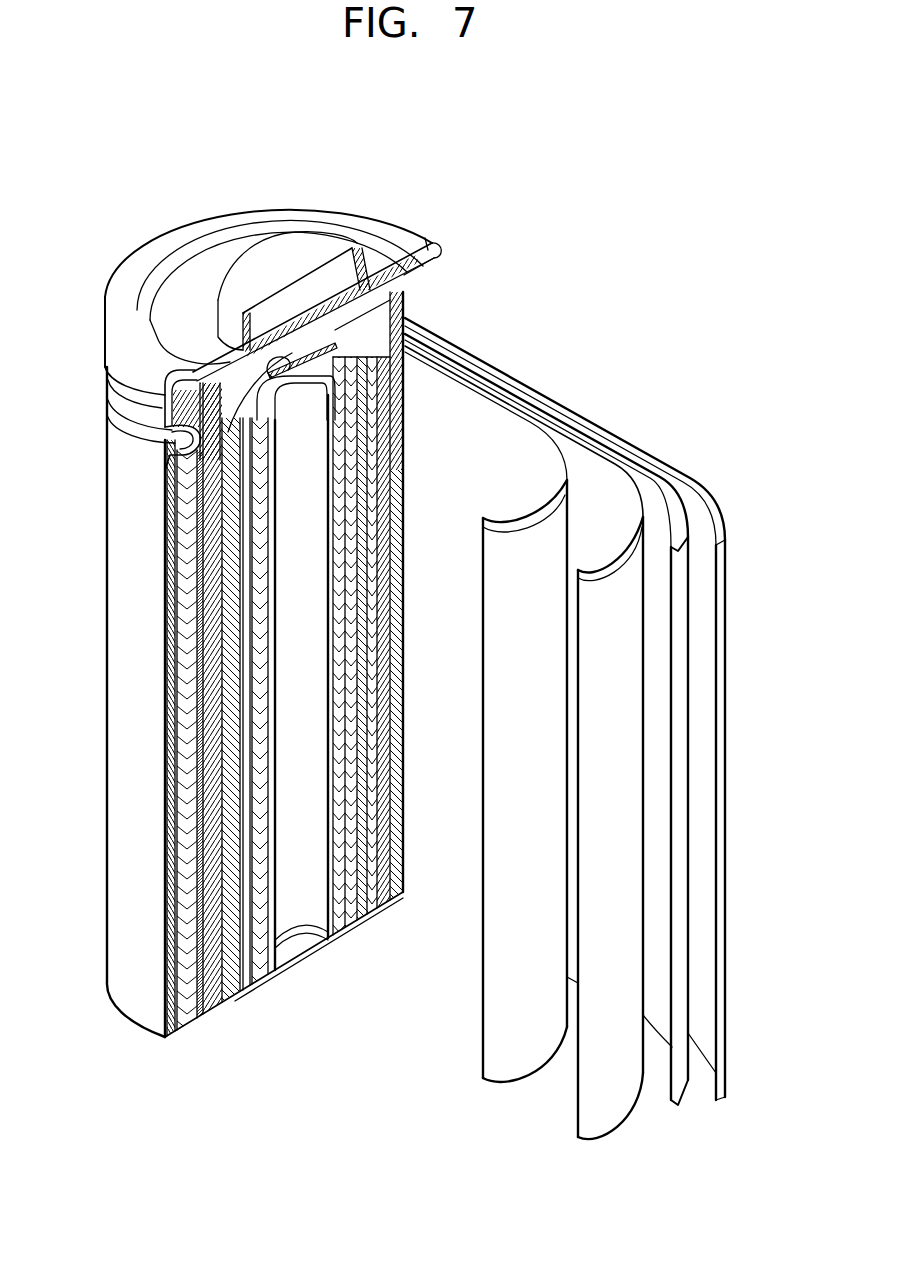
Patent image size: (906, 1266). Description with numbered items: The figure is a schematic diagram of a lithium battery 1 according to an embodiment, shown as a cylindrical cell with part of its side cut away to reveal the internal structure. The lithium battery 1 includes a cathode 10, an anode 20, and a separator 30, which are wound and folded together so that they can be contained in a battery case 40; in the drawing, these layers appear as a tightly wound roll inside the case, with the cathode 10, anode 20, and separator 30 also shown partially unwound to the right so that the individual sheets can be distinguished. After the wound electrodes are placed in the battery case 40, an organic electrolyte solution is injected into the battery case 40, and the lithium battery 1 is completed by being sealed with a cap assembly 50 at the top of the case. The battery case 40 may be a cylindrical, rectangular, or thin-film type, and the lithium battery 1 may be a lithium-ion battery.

The lithium battery 1 is at (632, 209).
The cathode 10 is at (702, 490).
The anode 20 is at (598, 455).
The separator 30 is at (520, 415).
The battery case 40 is at (120, 703).
The cap assembly 50 is at (245, 262).